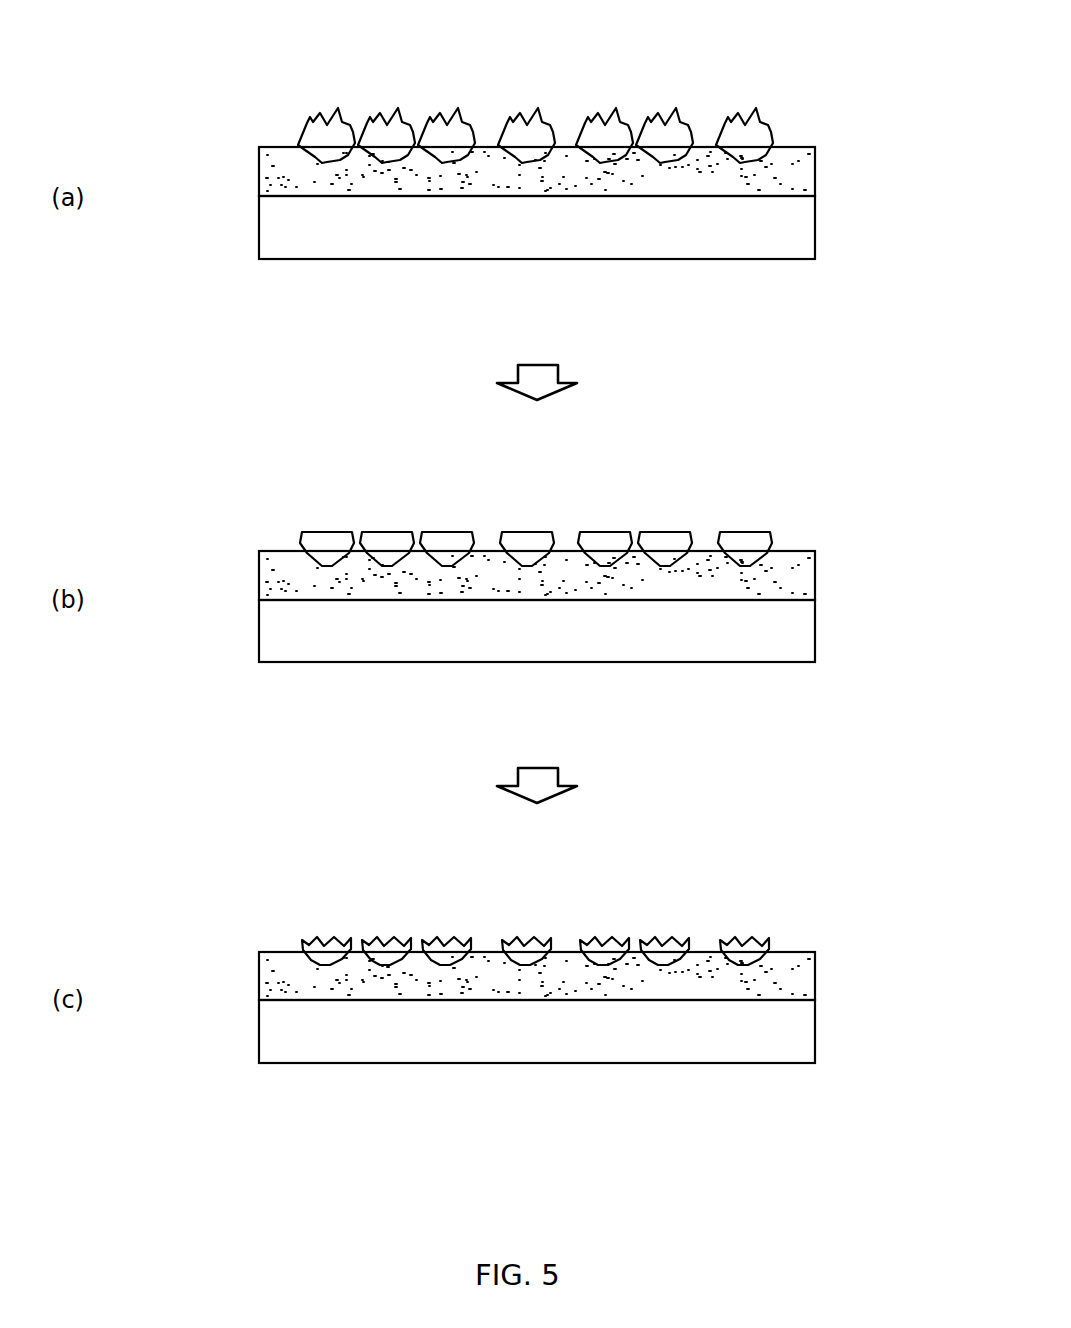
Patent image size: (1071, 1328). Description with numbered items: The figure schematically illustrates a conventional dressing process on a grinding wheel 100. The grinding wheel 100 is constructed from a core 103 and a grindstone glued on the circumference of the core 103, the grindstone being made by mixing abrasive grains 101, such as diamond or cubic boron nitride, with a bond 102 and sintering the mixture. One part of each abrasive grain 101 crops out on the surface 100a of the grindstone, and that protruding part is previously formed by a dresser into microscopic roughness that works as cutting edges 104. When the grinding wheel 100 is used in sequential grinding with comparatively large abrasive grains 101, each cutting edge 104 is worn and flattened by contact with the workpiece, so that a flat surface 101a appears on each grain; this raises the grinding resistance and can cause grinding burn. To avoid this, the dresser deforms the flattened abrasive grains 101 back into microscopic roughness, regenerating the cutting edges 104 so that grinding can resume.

The grinding wheel 100 is at (596, 573).
The surface of the grindstone 100a is at (797, 147).
The abrasive grain 101 is at (535, 573).
The flat surface 101a is at (332, 530).
The bond 102 is at (790, 183).
The core 103 is at (790, 233).
The cutting edge 104 is at (332, 108).